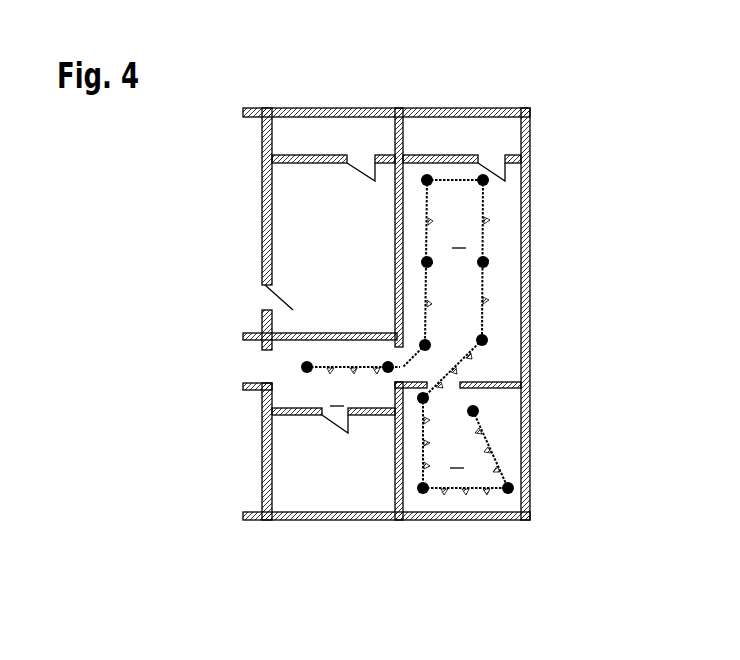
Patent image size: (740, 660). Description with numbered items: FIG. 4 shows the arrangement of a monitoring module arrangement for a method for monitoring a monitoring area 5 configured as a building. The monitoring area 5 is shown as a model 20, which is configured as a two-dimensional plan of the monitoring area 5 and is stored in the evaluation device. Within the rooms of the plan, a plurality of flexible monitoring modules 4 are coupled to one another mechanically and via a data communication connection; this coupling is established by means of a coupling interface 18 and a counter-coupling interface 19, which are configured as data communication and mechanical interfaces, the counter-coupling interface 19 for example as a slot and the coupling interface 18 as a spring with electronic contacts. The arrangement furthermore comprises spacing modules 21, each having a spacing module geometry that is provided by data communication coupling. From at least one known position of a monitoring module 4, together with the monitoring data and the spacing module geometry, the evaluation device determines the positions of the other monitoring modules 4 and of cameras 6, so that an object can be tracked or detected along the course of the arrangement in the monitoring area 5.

The monitoring module 4 is at (406, 373).
The monitoring area 5 is at (398, 347).
The camera 6 is at (488, 305).
The coupling interface 18 is at (410, 334).
The counter-coupling interface 19 is at (427, 183).
The model 20 is at (530, 122).
The spacing module 21 is at (455, 180).